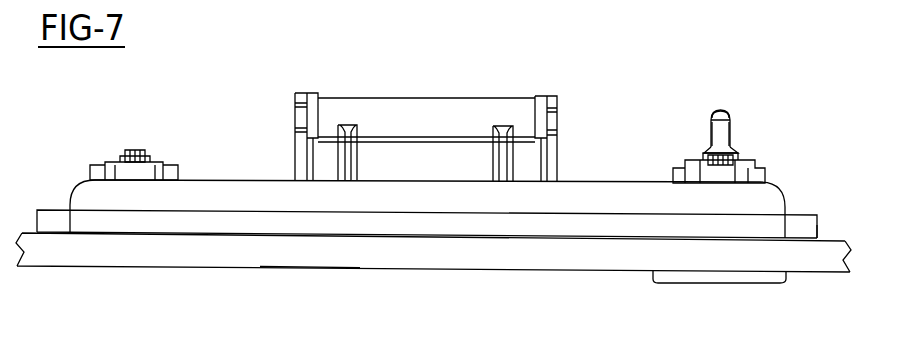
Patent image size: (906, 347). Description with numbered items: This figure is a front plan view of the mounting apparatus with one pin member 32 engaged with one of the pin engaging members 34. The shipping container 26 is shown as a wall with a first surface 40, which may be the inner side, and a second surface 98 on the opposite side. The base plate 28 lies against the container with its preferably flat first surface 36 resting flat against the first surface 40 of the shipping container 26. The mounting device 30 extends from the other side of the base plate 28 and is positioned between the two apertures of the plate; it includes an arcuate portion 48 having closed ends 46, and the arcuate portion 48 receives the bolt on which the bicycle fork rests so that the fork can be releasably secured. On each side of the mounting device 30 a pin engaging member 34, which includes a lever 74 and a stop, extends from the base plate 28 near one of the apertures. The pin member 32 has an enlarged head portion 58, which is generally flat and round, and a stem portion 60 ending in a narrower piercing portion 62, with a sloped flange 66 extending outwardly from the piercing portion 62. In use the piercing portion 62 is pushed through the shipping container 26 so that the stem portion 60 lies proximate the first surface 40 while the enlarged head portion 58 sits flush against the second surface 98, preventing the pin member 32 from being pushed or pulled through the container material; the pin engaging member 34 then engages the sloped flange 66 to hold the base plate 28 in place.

The shipping container 26 is at (147, 253).
The base plate 28 is at (748, 228).
The mounting device 30 is at (463, 113).
The pin member 32 is at (723, 132).
The pin engaging member 34 is at (138, 150).
The first surface 36 is at (190, 235).
The first surface 40 is at (825, 238).
The closed ends 46 is at (550, 102).
The arcuate portion 48 is at (346, 108).
The enlarged head portion 58 is at (715, 283).
The stem portion 60 is at (718, 127).
The piercing portion 62 is at (720, 110).
The sloped flange 66 is at (710, 150).
The lever 74 is at (128, 150).
The second surface 98 is at (303, 267).